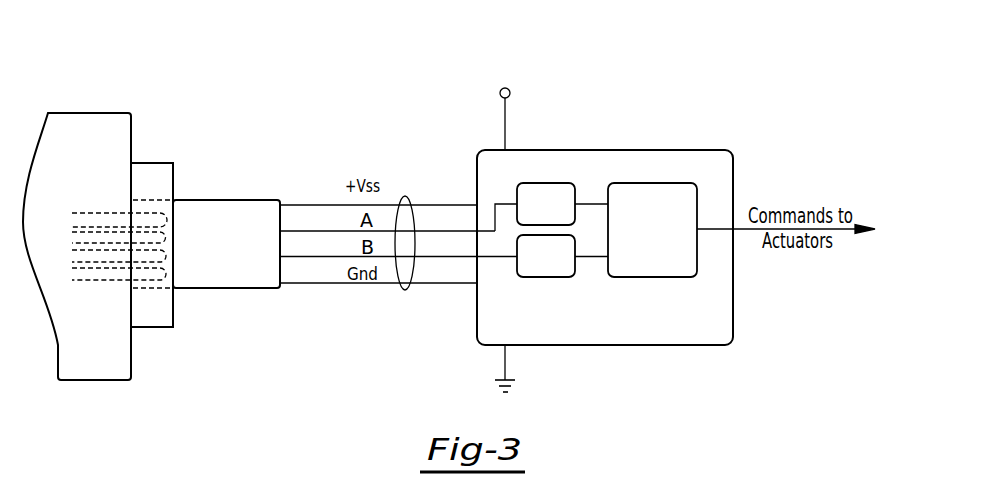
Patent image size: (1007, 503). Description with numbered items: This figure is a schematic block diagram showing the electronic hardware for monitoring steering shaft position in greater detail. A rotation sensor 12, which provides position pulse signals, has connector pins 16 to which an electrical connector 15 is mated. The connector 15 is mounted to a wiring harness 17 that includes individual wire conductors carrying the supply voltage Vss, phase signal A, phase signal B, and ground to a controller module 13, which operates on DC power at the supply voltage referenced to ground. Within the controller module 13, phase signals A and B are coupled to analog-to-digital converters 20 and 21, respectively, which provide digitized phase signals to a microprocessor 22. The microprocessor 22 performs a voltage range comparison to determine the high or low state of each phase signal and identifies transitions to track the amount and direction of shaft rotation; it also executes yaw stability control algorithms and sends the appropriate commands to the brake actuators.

The rotation sensor 12 is at (89, 90).
The controller module 13 is at (673, 150).
The electrical connector 15 is at (247, 200).
The connector pins 16 is at (102, 213).
The wiring harness 17 is at (405, 290).
The analog-to-digital converter 20 is at (548, 183).
The analog-to-digital converter 21 is at (548, 277).
The microprocessor 22 is at (650, 277).